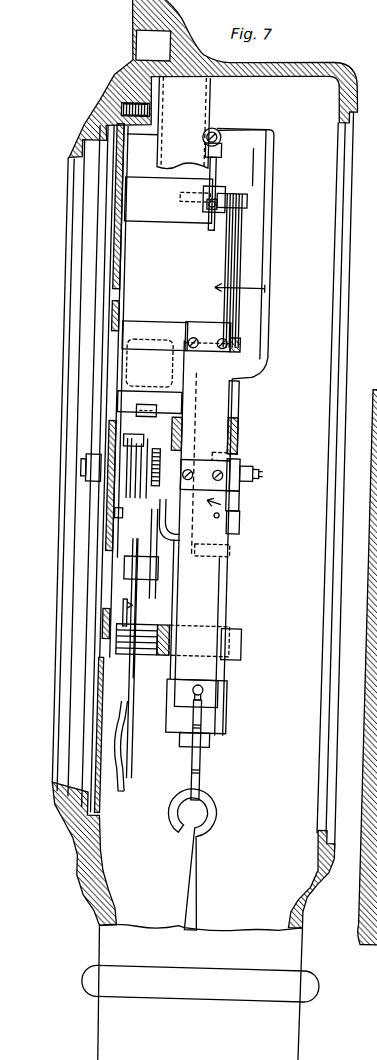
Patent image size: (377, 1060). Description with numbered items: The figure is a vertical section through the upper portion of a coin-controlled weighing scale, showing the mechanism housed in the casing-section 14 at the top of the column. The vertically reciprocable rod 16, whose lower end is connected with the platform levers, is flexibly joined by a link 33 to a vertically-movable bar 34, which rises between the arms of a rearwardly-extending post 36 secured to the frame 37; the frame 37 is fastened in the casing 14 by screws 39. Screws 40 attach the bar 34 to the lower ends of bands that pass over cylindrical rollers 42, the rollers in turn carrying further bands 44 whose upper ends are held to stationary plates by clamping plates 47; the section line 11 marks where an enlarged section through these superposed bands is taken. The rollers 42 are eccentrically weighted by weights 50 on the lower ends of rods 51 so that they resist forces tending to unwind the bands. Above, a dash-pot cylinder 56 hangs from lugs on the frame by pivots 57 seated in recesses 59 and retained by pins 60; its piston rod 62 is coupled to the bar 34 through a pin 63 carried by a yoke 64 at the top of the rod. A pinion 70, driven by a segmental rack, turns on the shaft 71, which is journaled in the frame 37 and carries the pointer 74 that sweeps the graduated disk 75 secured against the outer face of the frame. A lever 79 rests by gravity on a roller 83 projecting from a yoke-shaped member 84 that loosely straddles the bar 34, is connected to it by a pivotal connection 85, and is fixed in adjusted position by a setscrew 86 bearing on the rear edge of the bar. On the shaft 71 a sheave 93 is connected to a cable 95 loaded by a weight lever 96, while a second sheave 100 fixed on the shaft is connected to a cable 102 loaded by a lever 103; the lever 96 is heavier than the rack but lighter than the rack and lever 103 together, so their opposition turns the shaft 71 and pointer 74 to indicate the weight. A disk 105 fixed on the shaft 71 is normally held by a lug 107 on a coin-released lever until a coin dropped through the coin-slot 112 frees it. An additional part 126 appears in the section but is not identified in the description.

The section line 11 is at (235, 396).
The casing-section 14 is at (339, 73).
The vertically reciprocable rod 16 is at (206, 882).
The link 33 is at (208, 770).
The vertically-movable bar 34 is at (259, 266).
The rearwardly-extending post 36 is at (147, 657).
The frame 37 is at (101, 321).
The screws 39 is at (155, 108).
The screws 40 is at (217, 470).
The cylindrical rollers 42 is at (237, 394).
The bands 44 is at (221, 454).
The clamping plates 47 is at (184, 350).
The weights 50 is at (221, 717).
The rods 51 is at (238, 424).
The cylinder 56 is at (216, 272).
The pivots 57 is at (204, 205).
The recesses 59 is at (214, 204).
The pins 60 is at (209, 178).
The rod 62 is at (196, 162).
The pin 63 is at (210, 129).
The yoke 64 is at (213, 151).
The pinion 70 is at (170, 441).
The shaft 71 is at (84, 475).
The pointer 74 is at (92, 663).
The disk 75 is at (105, 209).
The lever 79 is at (161, 551).
The roller 83 is at (180, 538).
The yoke-shaped member 84 is at (241, 524).
The pivotal connection 85 is at (228, 504).
The setscrew 86 is at (262, 468).
The sheave 93 is at (150, 451).
The cable 95 is at (140, 732).
The lever 96 is at (138, 793).
The sheave 100 is at (140, 450).
The cable 102 is at (124, 567).
The lever 103 is at (128, 614).
The disk 105 is at (113, 516).
The lug 107 is at (135, 396).
The coin-slot 112 is at (121, 44).
The block 126 is at (147, 411).